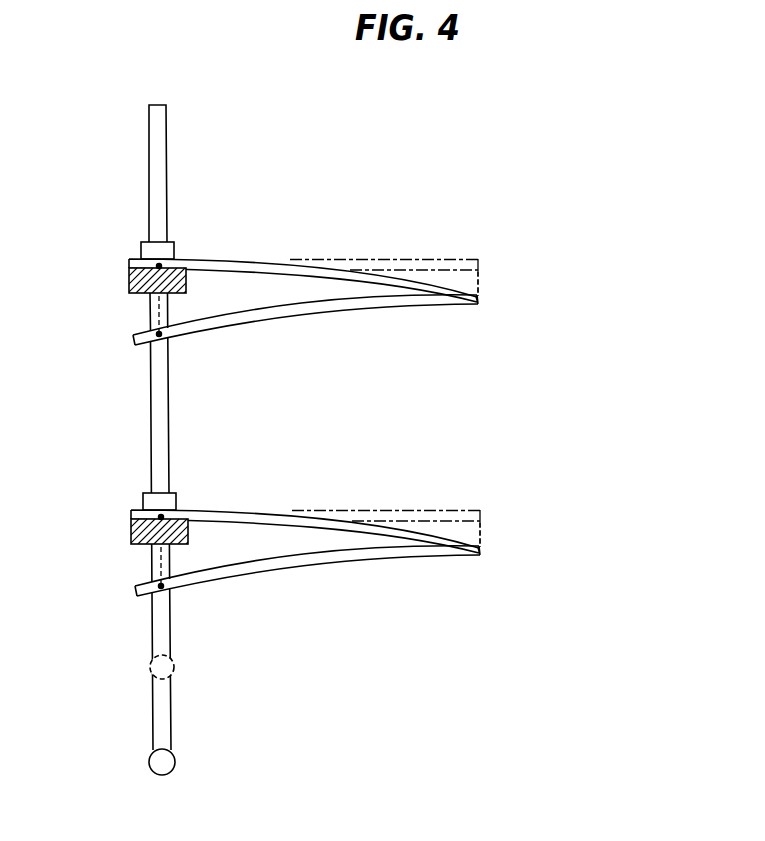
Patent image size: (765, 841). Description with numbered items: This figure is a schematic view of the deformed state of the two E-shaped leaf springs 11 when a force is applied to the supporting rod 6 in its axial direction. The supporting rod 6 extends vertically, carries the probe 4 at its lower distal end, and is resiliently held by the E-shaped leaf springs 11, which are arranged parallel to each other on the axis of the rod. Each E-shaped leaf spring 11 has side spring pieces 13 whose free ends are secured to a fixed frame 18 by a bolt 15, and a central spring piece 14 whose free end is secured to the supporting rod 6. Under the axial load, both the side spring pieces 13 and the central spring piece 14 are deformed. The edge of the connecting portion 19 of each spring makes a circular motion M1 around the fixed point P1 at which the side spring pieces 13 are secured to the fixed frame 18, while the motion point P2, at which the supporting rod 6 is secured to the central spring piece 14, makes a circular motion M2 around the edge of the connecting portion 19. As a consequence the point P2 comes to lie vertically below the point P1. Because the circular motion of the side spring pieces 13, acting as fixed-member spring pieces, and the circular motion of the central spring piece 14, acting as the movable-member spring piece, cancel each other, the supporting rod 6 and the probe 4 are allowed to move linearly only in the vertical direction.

The probe 4 is at (175, 667).
The supporting rod 6 is at (160, 149).
The E-shaped leaf spring 11 is at (456, 256).
The side spring piece 13 is at (243, 266).
The central spring piece 14 is at (289, 313).
The bolt 15 is at (169, 252).
The fixed frame 18 is at (128, 283).
The connecting portion 19 is at (478, 304).
The fixed point P1 is at (157, 266).
The motion point P2 is at (161, 336).
The circular motion of connecting portion edge M1 is at (480, 277).
The circular motion of motion point M2 is at (150, 305).